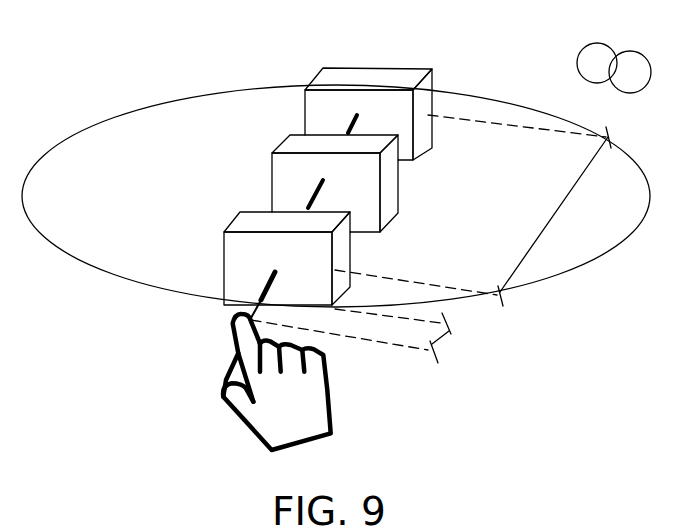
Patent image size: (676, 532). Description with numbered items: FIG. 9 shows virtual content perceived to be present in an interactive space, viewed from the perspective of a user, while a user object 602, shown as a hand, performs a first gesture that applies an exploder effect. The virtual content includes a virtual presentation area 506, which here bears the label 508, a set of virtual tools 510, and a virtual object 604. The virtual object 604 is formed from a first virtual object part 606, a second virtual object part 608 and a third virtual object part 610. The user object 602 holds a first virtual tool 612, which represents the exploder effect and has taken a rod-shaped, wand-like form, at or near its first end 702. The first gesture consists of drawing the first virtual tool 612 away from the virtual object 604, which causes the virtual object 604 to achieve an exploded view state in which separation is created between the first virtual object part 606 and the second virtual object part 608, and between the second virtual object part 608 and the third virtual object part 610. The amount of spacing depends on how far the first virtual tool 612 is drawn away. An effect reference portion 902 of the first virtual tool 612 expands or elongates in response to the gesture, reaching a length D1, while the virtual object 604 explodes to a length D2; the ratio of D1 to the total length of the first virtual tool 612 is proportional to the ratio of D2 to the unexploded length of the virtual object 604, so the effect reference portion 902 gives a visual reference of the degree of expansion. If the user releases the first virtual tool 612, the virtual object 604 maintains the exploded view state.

The virtual presentation area 506 is at (118, 113).
The display area 508 is at (133, 197).
The set of virtual tools 510 is at (530, 48).
The virtual object 604 is at (380, 165).
The third virtual object part 610 is at (432, 127).
The second virtual object part 608 is at (388, 177).
The first virtual object part 606 is at (340, 247).
The effect reference portion 902 is at (250, 313).
The first virtual tool 612 is at (233, 355).
The first end 702 is at (222, 378).
The user object 602 is at (244, 382).
The length of effect reference portion D1 is at (364, 336).
The exploded length of virtual object D2 is at (473, 210).